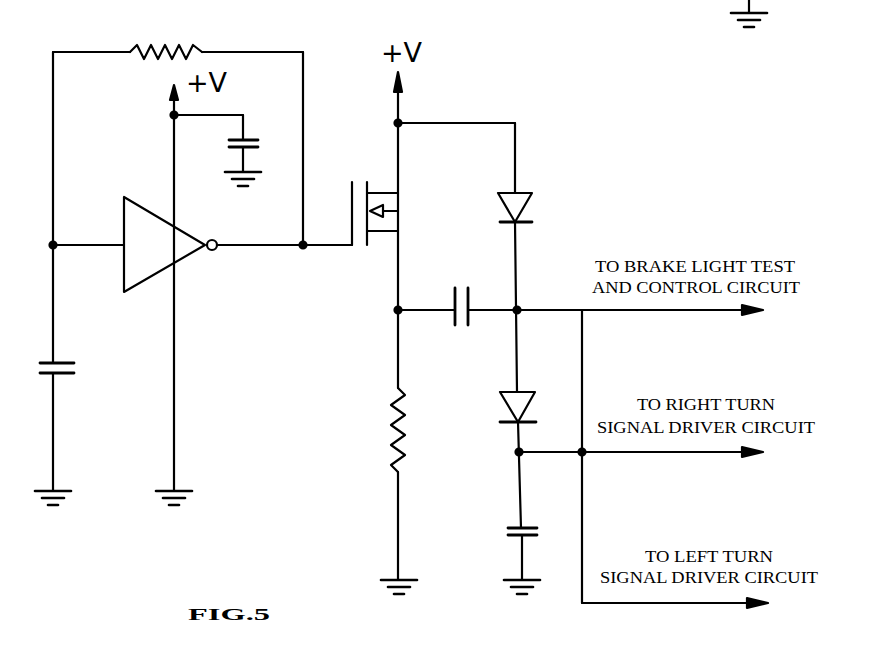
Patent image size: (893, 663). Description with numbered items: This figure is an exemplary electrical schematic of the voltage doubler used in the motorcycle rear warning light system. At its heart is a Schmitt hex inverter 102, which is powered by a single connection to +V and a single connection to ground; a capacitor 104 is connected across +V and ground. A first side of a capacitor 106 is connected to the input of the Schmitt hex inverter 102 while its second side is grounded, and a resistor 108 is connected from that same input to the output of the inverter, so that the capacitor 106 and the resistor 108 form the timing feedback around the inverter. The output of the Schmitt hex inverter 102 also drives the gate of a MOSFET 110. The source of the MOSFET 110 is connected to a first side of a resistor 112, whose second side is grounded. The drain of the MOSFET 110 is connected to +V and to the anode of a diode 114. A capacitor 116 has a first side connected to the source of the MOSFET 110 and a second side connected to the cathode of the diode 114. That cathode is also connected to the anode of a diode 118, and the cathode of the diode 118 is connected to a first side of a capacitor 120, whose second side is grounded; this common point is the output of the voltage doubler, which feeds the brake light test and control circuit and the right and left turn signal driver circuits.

The Schmitt hex inverter 102 is at (185, 257).
The capacitor 104 is at (280, 112).
The capacitor 106 is at (110, 365).
The resistor 108 is at (183, 32).
The MOSFET 110 is at (393, 203).
The resistor 112 is at (398, 415).
The diode 114 is at (531, 200).
The capacitor 116 is at (460, 328).
The diode 118 is at (505, 408).
The capacitor 120 is at (510, 533).